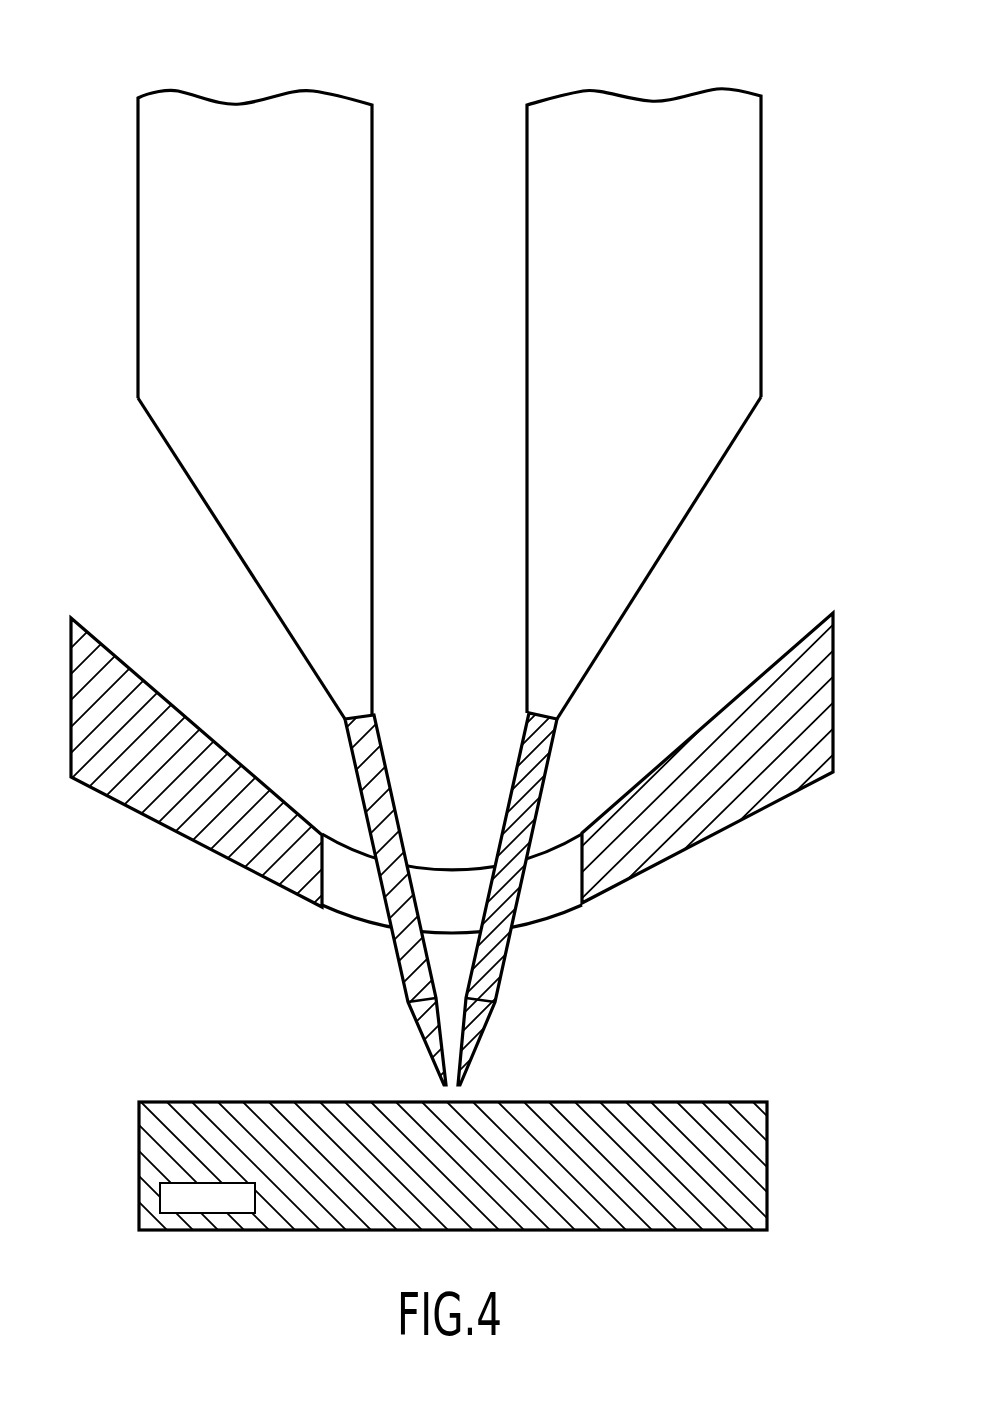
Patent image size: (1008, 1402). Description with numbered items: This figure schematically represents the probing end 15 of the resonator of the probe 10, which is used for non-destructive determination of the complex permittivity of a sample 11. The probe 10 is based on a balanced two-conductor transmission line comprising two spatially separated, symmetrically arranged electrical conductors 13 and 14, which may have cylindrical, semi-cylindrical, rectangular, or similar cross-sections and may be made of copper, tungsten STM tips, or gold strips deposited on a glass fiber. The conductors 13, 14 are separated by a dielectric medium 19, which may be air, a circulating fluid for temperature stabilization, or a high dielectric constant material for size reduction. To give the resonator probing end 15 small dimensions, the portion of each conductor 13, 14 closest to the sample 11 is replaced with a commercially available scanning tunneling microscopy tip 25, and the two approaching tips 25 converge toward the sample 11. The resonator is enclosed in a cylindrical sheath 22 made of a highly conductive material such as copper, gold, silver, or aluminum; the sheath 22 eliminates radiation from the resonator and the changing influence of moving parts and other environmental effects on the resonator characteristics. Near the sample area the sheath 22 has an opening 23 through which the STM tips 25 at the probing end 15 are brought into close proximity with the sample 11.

The probe 10 is at (768, 55).
The sample 11 is at (767, 1172).
The electrical conductor 13 is at (176, 183).
The electrical conductor 14 is at (733, 182).
The probing end 15 is at (468, 801).
The dielectric medium 19 is at (455, 152).
The cylindrical sheath 22 is at (810, 684).
The opening 23 is at (543, 900).
The scanning tunneling microscopy tip 25 is at (538, 750).